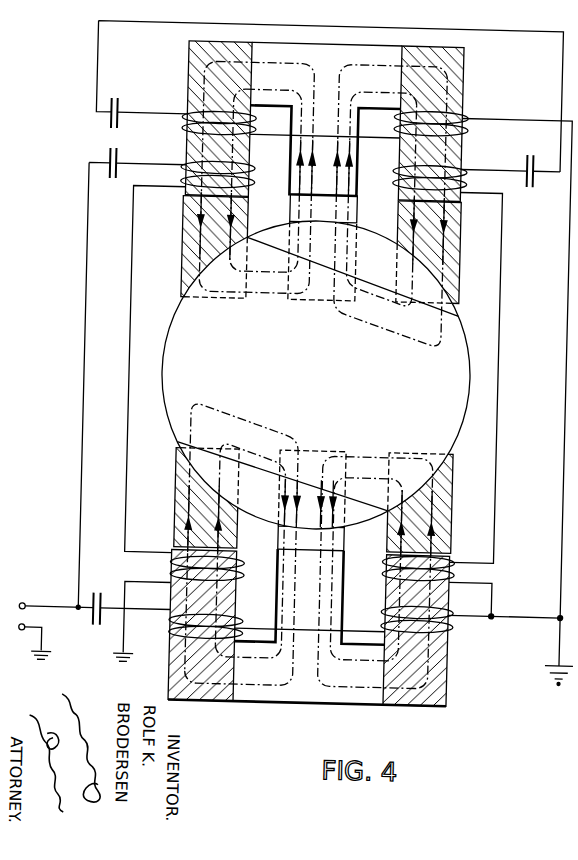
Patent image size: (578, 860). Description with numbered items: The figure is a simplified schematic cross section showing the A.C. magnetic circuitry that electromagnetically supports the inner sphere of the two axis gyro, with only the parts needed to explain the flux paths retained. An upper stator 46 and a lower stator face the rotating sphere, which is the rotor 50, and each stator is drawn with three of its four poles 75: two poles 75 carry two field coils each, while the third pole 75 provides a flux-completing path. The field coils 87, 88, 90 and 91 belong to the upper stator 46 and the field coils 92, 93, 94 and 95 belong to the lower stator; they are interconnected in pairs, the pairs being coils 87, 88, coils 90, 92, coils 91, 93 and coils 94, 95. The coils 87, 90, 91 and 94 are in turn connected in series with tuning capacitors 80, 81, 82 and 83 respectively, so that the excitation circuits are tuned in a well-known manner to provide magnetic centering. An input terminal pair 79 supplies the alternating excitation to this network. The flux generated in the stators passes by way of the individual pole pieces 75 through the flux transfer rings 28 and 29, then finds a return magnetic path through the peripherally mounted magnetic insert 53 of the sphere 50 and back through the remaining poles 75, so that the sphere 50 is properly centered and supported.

The flux transfer ring 28 is at (244, 219).
The flux transfer ring 29 is at (241, 531).
The stator 46 is at (461, 67).
The rotor 50 is at (388, 262).
The magnetic insert 53 is at (262, 352).
The pole 75 is at (250, 156).
The input terminals 79 is at (26, 610).
The tuning capacitor 80 is at (113, 110).
The tuning capacitor 81 is at (114, 158).
The tuning capacitor 82 is at (530, 150).
The tuning capacitor 83 is at (105, 598).
The field coil 87 is at (252, 121).
The field coil 88 is at (460, 115).
The field coil 90 is at (252, 180).
The field coil 91 is at (389, 171).
The field coil 92 is at (248, 580).
The field coil 93 is at (389, 575).
The field coil 94 is at (248, 621).
The field coil 95 is at (458, 625).